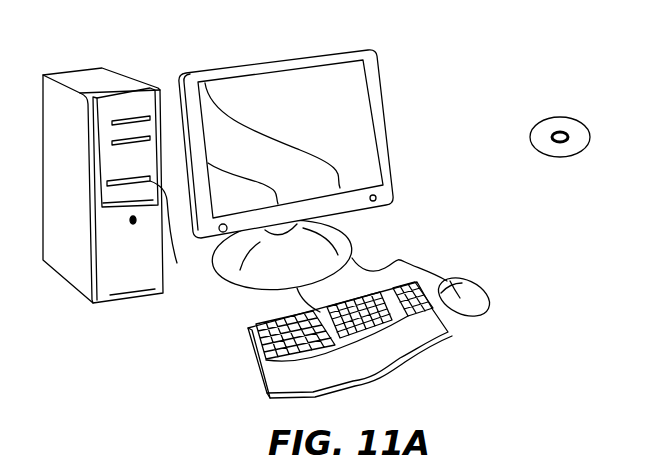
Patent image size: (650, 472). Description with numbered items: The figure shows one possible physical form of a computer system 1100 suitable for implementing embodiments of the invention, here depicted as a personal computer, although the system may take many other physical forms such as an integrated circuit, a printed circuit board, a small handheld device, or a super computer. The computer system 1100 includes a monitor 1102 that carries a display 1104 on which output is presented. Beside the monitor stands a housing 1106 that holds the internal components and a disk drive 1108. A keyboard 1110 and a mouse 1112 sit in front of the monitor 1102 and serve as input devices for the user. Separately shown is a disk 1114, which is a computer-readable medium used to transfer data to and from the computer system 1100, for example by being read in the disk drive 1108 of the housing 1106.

The computer system 1100 is at (490, 37).
The monitor 1102 is at (389, 145).
The display 1104 is at (345, 88).
The housing 1106 is at (92, 76).
The disk drive 1108 is at (180, 236).
The keyboard 1110 is at (265, 368).
The mouse 1112 is at (483, 295).
The disk 1114 is at (573, 117).